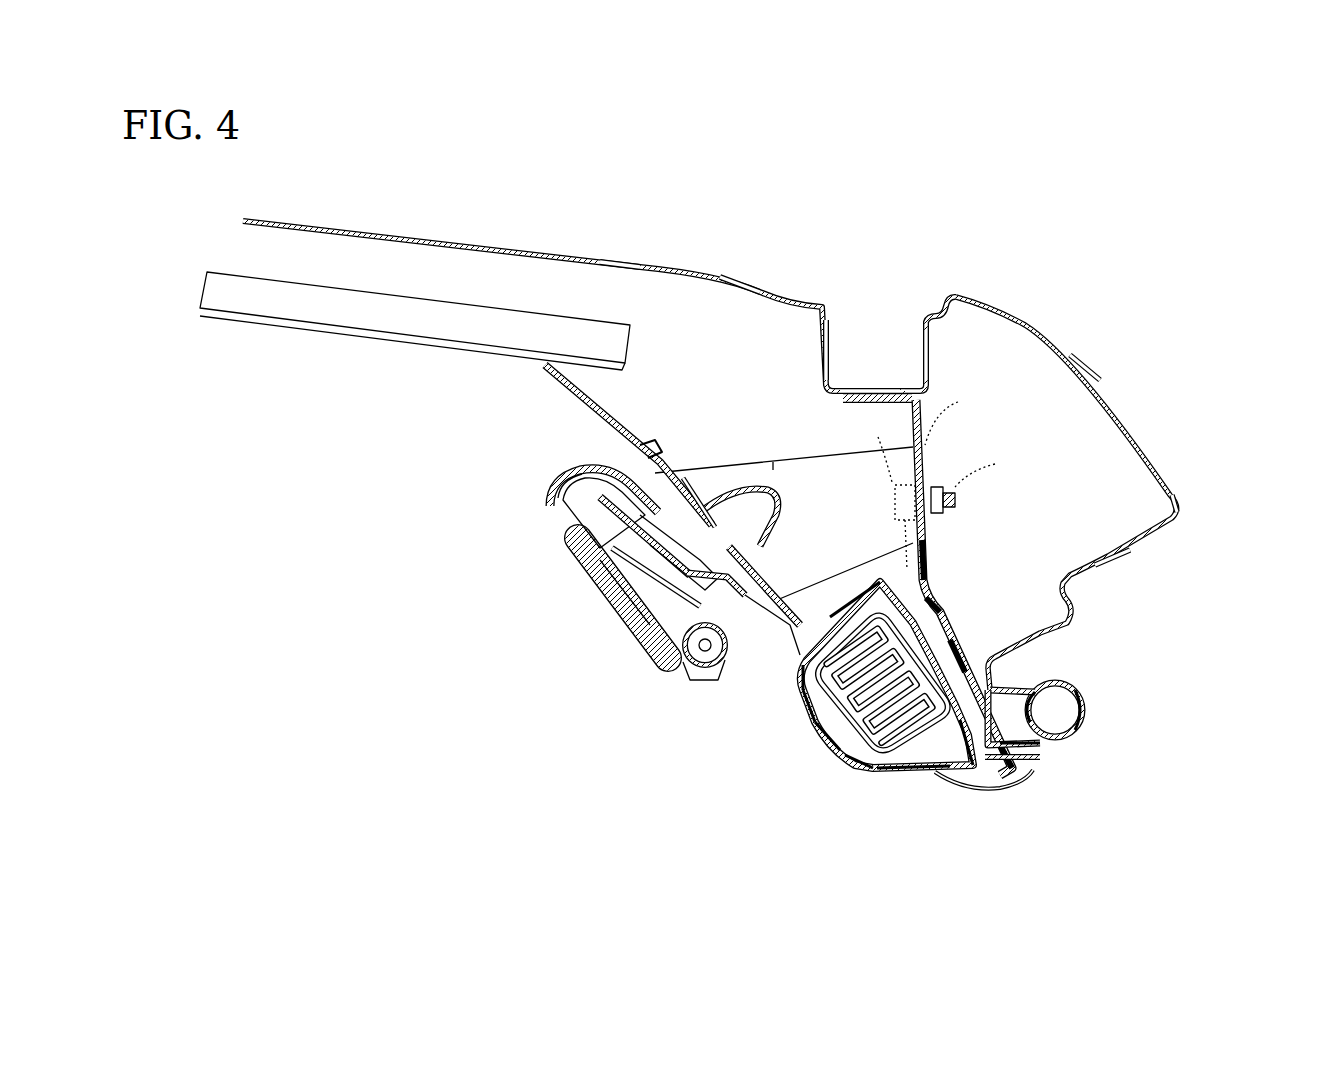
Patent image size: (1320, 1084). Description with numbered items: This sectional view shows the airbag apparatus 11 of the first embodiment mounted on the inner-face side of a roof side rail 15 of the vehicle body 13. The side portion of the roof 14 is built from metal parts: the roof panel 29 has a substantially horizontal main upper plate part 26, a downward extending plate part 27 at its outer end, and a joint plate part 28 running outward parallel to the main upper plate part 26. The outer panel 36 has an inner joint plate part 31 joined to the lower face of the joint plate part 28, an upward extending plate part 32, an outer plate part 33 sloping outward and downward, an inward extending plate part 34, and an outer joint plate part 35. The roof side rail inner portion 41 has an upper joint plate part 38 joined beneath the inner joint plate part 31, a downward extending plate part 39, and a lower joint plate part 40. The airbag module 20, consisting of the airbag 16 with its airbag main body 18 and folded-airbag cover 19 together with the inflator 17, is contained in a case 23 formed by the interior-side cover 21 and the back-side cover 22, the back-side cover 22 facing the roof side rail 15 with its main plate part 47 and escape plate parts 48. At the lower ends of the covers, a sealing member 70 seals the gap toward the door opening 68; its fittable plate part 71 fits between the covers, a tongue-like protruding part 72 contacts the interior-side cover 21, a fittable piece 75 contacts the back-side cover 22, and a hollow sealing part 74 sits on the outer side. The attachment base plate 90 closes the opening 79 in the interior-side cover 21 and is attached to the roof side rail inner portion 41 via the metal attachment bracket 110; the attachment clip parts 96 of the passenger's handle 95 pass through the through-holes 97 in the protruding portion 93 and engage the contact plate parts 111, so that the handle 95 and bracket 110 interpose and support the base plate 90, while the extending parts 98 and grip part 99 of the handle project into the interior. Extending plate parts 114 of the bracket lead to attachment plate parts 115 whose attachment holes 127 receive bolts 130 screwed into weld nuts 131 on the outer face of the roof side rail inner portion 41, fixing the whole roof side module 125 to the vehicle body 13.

The airbag apparatus 11 is at (835, 796).
The vehicle body 13 is at (373, 203).
The roof 14 is at (488, 236).
The roof side rail 15 is at (1028, 320).
The airbag 16 is at (910, 778).
The inflator 17 is at (735, 533).
The airbag main body 18 is at (866, 771).
The cover 19 is at (815, 706).
The airbag module 20 is at (841, 762).
The interior-side cover 21 is at (800, 738).
The back-side cover 22 is at (936, 619).
The case 23 is at (815, 748).
The main upper plate part 26 is at (633, 262).
The downward extending plate part 27 is at (832, 340).
The joint plate part 28 is at (866, 388).
The roof panel 29 is at (745, 284).
The inner joint plate part 31 is at (910, 388).
The upward extending plate part 32 is at (930, 362).
The outer plate part 33 is at (1085, 375).
The inward extending plate part 34 is at (1100, 560).
The outer joint plate part 35 is at (1042, 760).
The outer panel 36 is at (1186, 510).
The upper joint plate part 38 is at (843, 403).
The downward extending plate part 39 is at (927, 468).
The lower joint plate part 40 is at (1018, 778).
The roof side rail inner portion 41 is at (934, 557).
The main plate part 47 is at (960, 665).
The escape plate part 48 is at (797, 620).
The door opening 68 is at (1053, 766).
The sealing member 70 is at (1086, 730).
The fittable plate part 71 is at (985, 782).
The protruding part 72 is at (952, 788).
The hollow sealing part 74 is at (1080, 700).
The fittable piece 75 is at (1020, 718).
The opening 79 is at (636, 463).
The attachment base plate 90 is at (662, 452).
The protruding portion 93 is at (727, 658).
The passenger's handle 95 is at (546, 518).
The attachment clip parts 96 is at (745, 489).
The through-holes 97 is at (617, 549).
The extending parts 98 is at (622, 626).
The grip part 99 is at (560, 492).
The attachment bracket 110 is at (773, 460).
The contact plate parts 111 is at (685, 476).
The extending plate parts 114 is at (817, 472).
The attachment plate parts 115 is at (957, 411).
The roof side module 125 is at (930, 815).
The attachment hole 127 is at (993, 463).
The bolts 130 is at (878, 437).
The weld nuts 131 is at (956, 505).